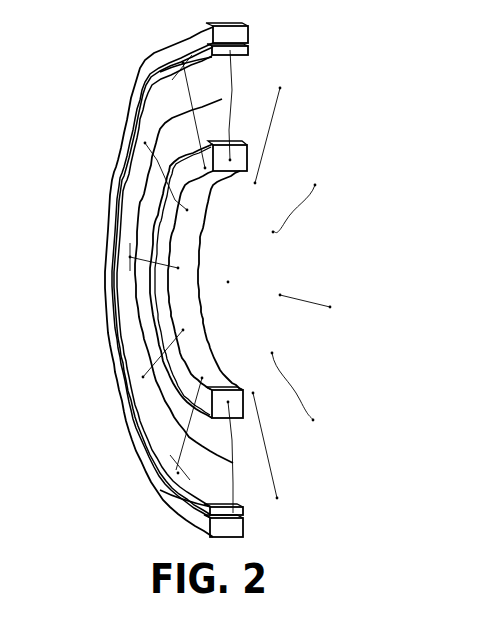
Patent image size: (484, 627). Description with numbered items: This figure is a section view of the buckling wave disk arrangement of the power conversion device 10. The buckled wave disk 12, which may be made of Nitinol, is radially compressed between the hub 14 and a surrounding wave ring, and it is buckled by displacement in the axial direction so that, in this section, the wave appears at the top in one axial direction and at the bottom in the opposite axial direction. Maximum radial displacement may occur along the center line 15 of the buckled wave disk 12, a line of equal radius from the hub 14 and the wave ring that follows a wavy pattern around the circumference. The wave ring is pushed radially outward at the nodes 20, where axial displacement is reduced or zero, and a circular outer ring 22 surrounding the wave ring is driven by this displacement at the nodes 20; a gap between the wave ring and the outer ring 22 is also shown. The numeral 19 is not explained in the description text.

The power conversion device 10 is at (84, 70).
The buckled wave disk 12 is at (218, 75).
The hub 14 is at (200, 300).
The center line 15 is at (178, 415).
The connecting element 19 is at (227, 112).
The nodes or apexes 20 is at (158, 98).
The circular outer ring 22 is at (200, 32).